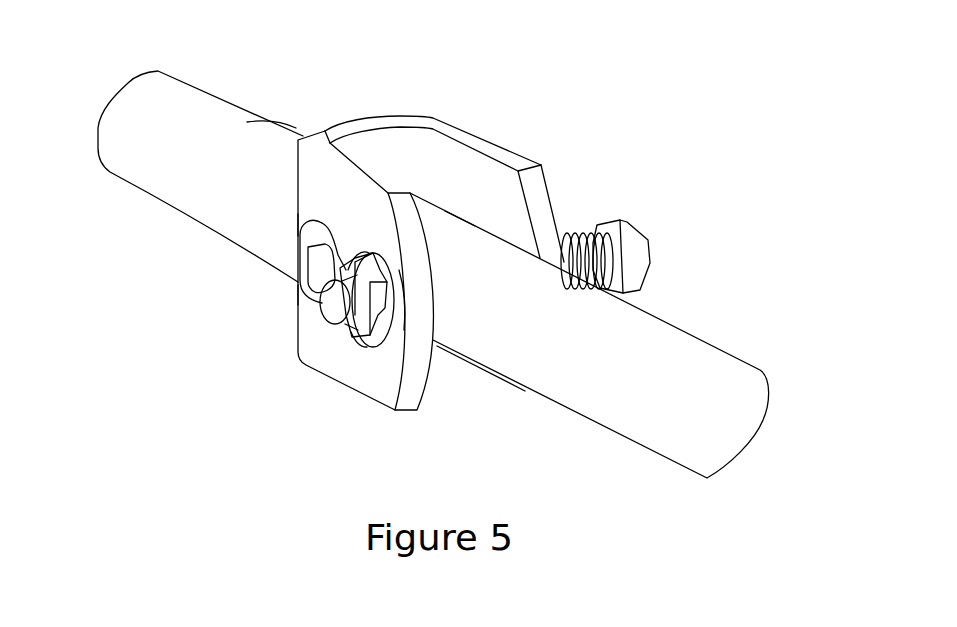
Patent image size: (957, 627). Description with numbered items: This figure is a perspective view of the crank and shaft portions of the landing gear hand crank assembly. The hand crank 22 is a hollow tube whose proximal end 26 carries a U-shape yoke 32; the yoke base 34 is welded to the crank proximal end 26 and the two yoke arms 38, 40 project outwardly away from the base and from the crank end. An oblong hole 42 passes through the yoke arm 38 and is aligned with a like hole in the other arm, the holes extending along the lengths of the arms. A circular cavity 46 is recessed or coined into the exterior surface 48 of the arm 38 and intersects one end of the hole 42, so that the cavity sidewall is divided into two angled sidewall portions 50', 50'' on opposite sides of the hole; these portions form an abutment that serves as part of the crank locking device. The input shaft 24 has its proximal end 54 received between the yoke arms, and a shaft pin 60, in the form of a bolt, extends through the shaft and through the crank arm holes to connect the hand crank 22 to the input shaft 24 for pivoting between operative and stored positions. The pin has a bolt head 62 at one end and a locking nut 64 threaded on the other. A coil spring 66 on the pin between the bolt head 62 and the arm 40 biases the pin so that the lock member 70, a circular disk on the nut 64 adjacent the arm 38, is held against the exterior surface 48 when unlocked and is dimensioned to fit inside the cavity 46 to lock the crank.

The hand crank 22 is at (150, 175).
The input shaft 24 is at (730, 378).
The proximal end 26 is at (300, 122).
The yoke 32 is at (437, 116).
The yoke base 34 is at (357, 118).
The yoke arm 38 is at (327, 360).
The yoke arm 40 is at (498, 138).
The oblong hole 42 is at (344, 253).
The circular cavity 46 is at (298, 295).
The exterior surface 48 is at (388, 410).
The sidewall portion 50' is at (227, 133).
The sidewall portion 50'' is at (298, 333).
The shaft proximal end 54 is at (455, 240).
The shaft pin 60 is at (345, 352).
The bolt head 62 is at (649, 241).
The locking nut 64 is at (383, 380).
The coil spring 66 is at (574, 233).
The lock member 70 is at (397, 297).